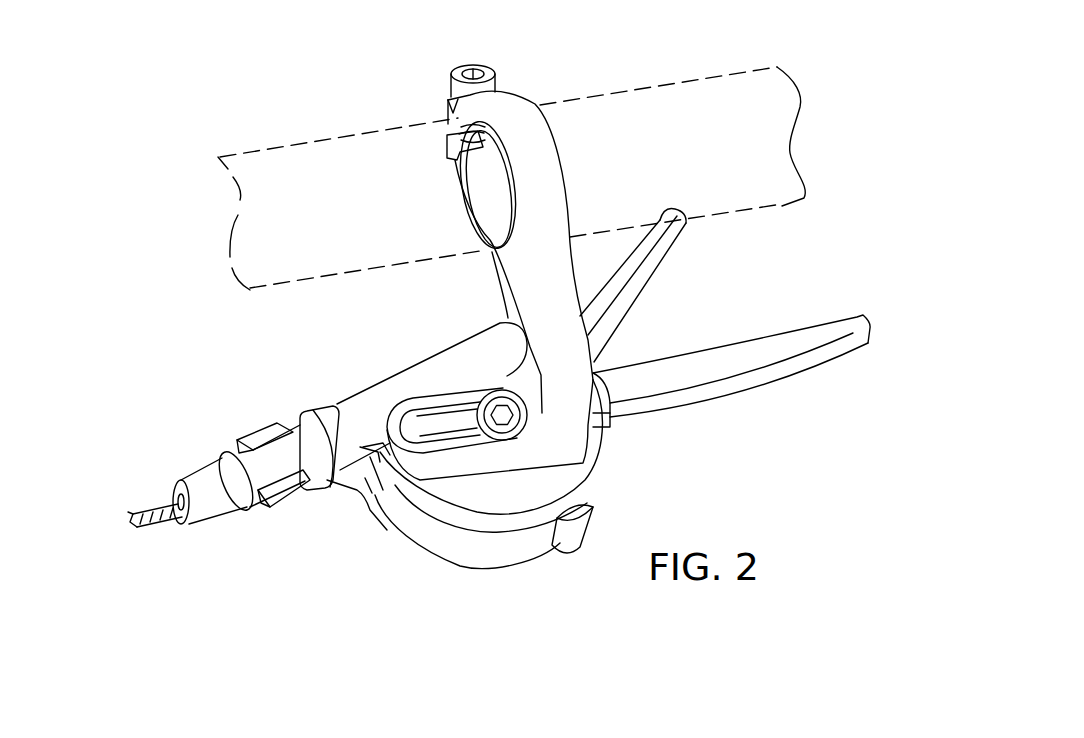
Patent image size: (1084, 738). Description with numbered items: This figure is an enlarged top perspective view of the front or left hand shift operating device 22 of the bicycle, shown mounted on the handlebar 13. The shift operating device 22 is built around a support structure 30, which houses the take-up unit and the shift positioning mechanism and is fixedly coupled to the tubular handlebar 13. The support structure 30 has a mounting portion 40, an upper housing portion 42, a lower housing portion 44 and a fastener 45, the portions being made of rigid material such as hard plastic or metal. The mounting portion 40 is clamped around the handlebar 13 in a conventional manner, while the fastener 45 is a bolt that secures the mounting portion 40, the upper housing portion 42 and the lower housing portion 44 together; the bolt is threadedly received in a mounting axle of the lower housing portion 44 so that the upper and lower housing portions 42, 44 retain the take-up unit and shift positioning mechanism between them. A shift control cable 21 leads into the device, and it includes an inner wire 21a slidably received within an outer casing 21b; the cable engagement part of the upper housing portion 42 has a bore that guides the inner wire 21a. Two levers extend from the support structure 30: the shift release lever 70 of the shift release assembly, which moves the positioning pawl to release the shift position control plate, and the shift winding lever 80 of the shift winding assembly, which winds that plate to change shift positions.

The handlebar 13 is at (733, 68).
The support structure 30 is at (580, 148).
The mounting portion 40 is at (460, 208).
The shift winding lever 80 is at (650, 270).
The shift release lever 70 is at (780, 367).
The front shift operating device 22 is at (372, 357).
The fastener 45 is at (487, 408).
The upper housing portion 42 is at (602, 471).
The lower housing portion 44 is at (465, 580).
The shift control cable 21 is at (218, 398).
The inner wire 21a is at (143, 510).
The outer casing 21b is at (197, 470).